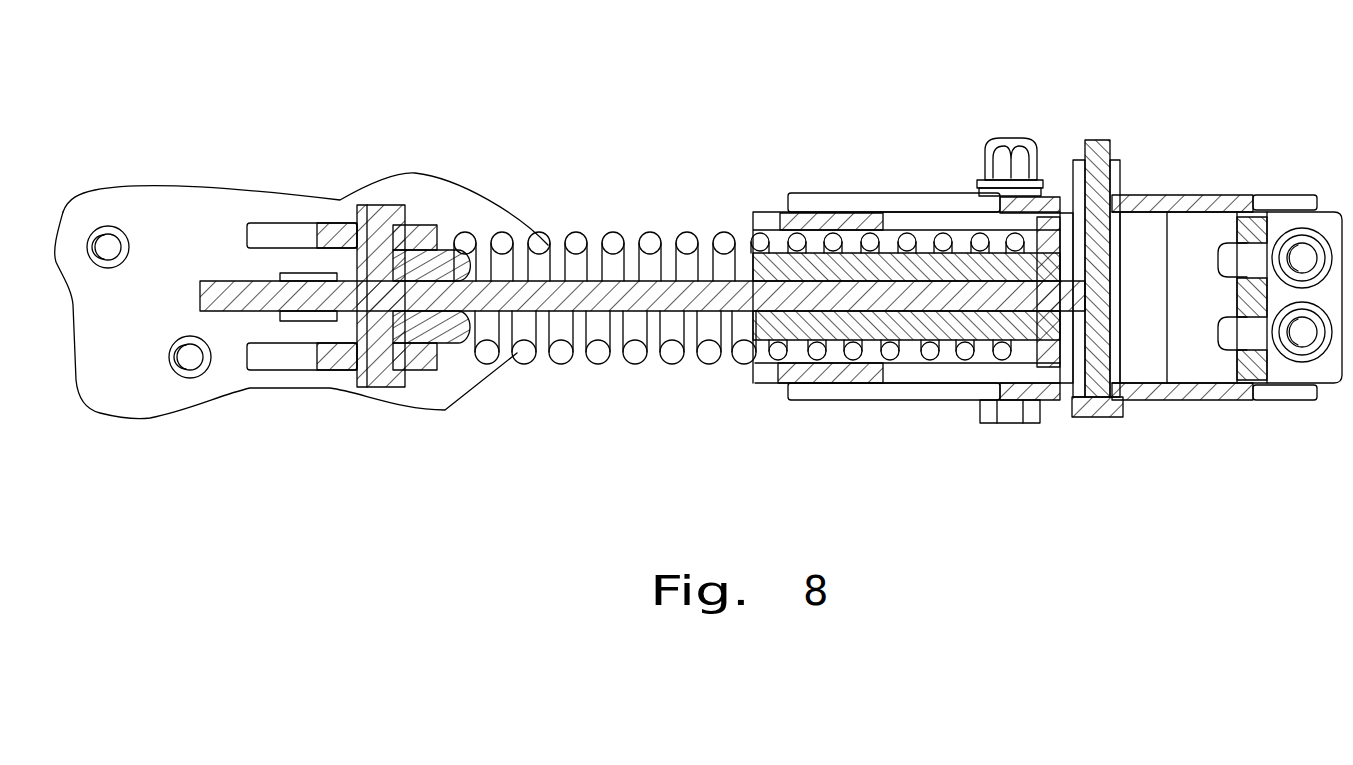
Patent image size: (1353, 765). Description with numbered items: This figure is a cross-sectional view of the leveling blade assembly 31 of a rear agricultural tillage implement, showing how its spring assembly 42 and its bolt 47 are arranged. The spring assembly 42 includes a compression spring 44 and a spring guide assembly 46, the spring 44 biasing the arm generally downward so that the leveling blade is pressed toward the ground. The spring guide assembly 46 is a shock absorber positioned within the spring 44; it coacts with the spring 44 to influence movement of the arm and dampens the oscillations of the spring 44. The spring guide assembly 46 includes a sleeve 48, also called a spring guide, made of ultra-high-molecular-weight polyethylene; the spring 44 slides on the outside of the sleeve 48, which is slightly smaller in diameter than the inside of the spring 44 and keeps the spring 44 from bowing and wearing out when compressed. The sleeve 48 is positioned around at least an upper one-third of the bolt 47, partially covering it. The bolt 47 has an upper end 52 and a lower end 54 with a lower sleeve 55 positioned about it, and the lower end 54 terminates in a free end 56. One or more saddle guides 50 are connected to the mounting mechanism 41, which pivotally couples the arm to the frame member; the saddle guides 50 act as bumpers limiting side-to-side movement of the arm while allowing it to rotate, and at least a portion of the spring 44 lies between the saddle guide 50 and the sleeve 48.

The leveling blade assembly 31 is at (1015, 95).
The mounting mechanism 41 is at (1203, 195).
The spring assembly 42 is at (615, 364).
The spring 44 is at (622, 230).
The spring guide assembly 46 is at (930, 362).
The bolt 47 is at (557, 283).
The sleeve 48 is at (927, 240).
The saddle guide 50 is at (852, 215).
The upper end 52 is at (1050, 222).
The lower end 54 is at (433, 293).
The lower sleeve 55 is at (440, 253).
The free end 56 is at (200, 283).